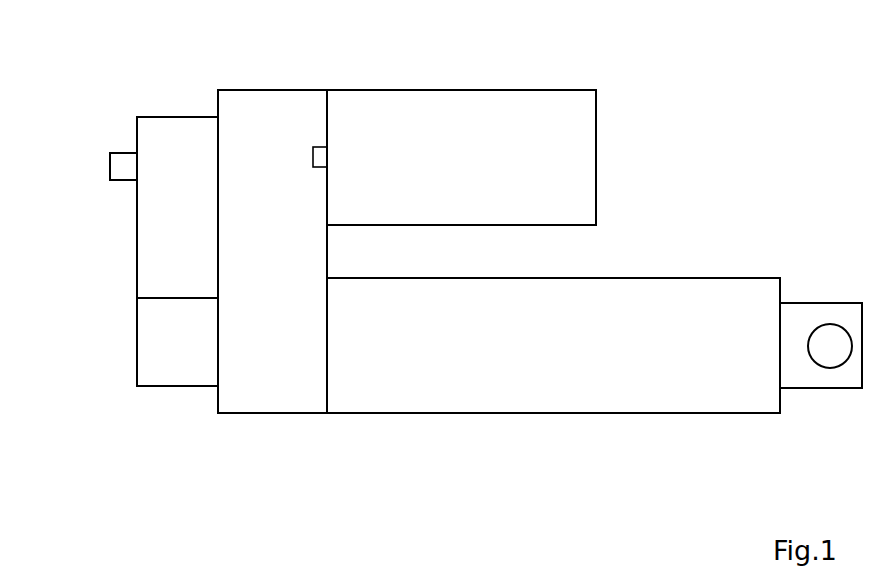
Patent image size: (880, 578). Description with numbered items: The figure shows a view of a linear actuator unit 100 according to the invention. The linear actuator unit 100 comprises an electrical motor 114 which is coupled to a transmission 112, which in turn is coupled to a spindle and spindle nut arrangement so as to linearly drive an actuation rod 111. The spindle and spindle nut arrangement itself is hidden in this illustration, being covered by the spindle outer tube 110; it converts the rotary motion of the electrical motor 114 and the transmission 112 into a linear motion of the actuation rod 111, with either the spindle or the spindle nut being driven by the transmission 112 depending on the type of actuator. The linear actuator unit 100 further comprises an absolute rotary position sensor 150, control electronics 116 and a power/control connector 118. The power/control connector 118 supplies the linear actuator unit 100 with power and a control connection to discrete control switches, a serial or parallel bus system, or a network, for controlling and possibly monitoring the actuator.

The linear actuator unit 100 is at (722, 86).
The spindle outer tube 110 is at (483, 413).
The actuation rod 111 is at (820, 388).
The transmission 112 is at (273, 413).
The electrical motor 114 is at (396, 90).
The control electronics 116 is at (172, 117).
The power/control connector 118 is at (110, 160).
The absolute rotary position sensor 150 is at (177, 386).